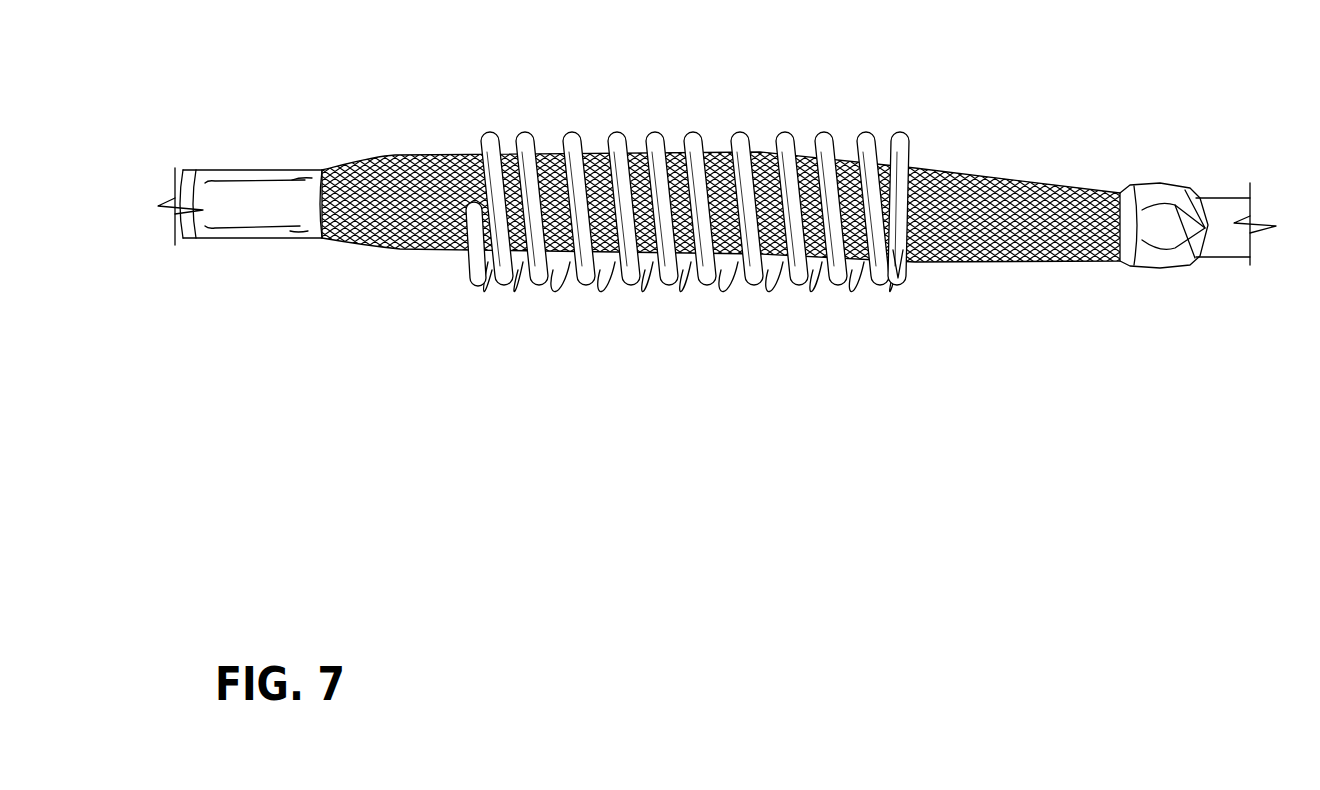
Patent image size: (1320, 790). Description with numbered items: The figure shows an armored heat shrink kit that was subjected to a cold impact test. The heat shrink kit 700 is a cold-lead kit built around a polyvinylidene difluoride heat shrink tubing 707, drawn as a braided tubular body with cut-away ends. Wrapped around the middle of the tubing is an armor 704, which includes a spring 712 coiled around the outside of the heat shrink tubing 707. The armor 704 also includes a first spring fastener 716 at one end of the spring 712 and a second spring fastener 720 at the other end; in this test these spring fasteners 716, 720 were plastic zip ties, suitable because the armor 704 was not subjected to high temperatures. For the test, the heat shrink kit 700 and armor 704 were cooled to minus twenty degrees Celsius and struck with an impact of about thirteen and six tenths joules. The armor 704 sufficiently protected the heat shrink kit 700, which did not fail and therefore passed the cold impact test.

The heat shrink kit 700 is at (1118, 392).
The armor 704 is at (905, 101).
The heat shrink tubing 707 is at (970, 262).
The spring 712 is at (903, 131).
The first spring fastener 716 is at (505, 152).
The second spring fastener 720 is at (891, 268).